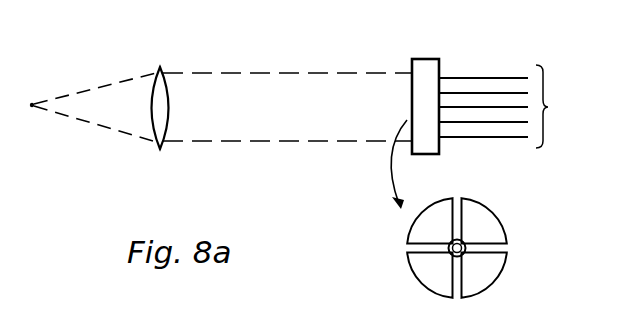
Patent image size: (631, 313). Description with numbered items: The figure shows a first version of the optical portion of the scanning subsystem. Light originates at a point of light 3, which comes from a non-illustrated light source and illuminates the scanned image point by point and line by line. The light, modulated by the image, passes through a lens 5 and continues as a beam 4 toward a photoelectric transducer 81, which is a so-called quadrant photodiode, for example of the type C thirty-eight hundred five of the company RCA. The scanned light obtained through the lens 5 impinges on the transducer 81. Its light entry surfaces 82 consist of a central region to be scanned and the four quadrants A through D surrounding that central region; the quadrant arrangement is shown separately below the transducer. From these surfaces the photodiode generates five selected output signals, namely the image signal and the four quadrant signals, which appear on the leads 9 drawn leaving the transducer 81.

The point of light 3 is at (35, 109).
The lens 5 is at (158, 70).
The light beam 4 is at (291, 124).
The photoelectric transducer 81 is at (427, 79).
The light entry surfaces 82 is at (412, 103).
The leads 9 is at (516, 106).